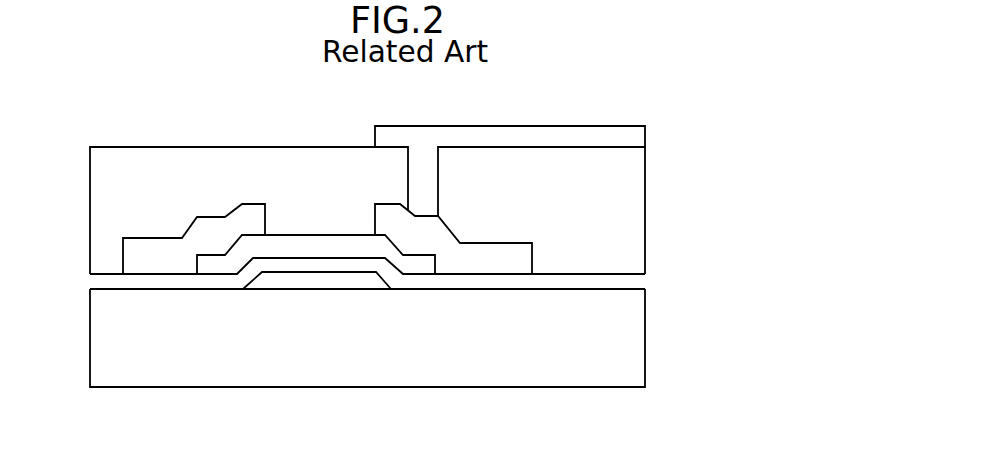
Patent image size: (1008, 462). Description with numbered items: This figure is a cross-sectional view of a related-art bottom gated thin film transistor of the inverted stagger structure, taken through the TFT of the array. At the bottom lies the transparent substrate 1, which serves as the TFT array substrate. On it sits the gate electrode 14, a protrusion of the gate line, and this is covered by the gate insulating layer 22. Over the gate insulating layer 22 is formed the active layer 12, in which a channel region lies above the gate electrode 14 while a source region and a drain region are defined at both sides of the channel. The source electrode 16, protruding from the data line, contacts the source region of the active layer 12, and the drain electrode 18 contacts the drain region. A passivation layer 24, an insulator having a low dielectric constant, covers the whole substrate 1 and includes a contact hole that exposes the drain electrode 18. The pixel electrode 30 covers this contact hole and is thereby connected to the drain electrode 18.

The transparent substrate 1 is at (632, 325).
The active layer 12 is at (302, 245).
The gate electrode 14 is at (328, 280).
The source electrode 16 is at (207, 232).
The drain electrode 18 is at (443, 238).
The gate insulating layer 22 is at (438, 283).
The passivation layer 24 is at (633, 205).
The pixel electrode 30 is at (648, 126).